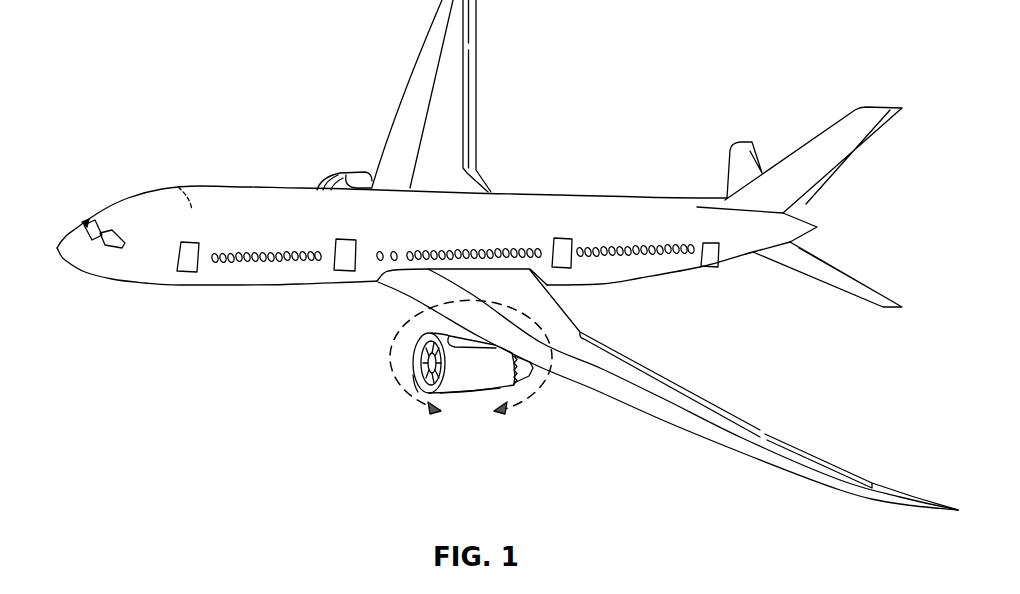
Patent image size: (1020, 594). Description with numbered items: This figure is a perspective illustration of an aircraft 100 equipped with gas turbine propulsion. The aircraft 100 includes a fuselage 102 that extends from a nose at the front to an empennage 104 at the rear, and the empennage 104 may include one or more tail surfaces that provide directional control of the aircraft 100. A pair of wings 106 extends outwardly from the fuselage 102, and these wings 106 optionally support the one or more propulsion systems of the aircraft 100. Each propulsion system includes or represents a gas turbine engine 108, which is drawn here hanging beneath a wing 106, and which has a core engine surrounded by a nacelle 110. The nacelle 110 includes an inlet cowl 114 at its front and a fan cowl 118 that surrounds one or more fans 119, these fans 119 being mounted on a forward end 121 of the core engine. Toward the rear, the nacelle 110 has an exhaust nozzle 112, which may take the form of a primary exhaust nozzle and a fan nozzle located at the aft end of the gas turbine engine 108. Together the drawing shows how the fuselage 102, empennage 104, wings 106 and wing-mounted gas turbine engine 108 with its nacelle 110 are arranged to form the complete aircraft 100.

The aircraft 100 is at (127, 196).
The fuselage 102 is at (559, 195).
The empennage 104 is at (822, 203).
The wings 106 is at (428, 50).
The gas turbine engine 108 is at (342, 173).
The nacelle 110 is at (478, 388).
The exhaust nozzle 112 is at (532, 372).
The inlet cowl 114 is at (410, 373).
The fan cowl 118 is at (462, 389).
The fans 119 is at (424, 358).
The forward end 121 is at (410, 392).